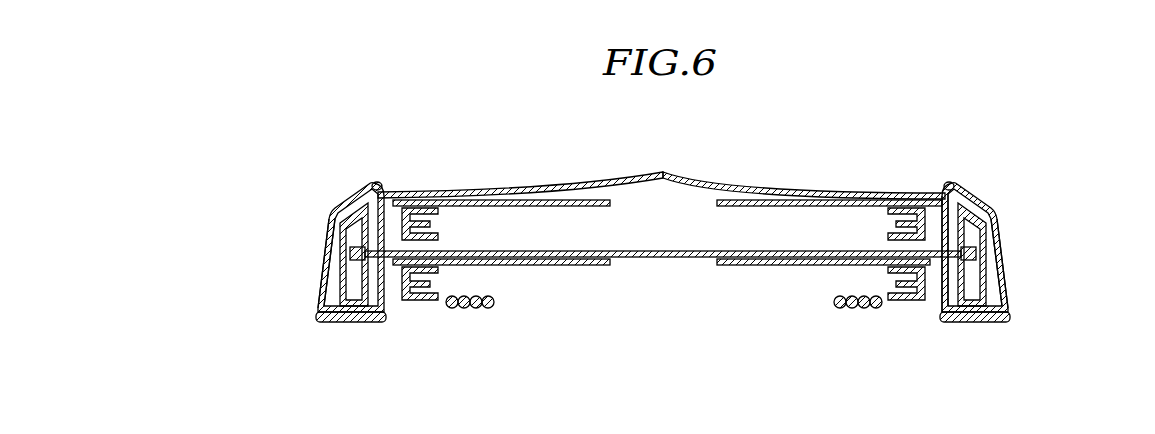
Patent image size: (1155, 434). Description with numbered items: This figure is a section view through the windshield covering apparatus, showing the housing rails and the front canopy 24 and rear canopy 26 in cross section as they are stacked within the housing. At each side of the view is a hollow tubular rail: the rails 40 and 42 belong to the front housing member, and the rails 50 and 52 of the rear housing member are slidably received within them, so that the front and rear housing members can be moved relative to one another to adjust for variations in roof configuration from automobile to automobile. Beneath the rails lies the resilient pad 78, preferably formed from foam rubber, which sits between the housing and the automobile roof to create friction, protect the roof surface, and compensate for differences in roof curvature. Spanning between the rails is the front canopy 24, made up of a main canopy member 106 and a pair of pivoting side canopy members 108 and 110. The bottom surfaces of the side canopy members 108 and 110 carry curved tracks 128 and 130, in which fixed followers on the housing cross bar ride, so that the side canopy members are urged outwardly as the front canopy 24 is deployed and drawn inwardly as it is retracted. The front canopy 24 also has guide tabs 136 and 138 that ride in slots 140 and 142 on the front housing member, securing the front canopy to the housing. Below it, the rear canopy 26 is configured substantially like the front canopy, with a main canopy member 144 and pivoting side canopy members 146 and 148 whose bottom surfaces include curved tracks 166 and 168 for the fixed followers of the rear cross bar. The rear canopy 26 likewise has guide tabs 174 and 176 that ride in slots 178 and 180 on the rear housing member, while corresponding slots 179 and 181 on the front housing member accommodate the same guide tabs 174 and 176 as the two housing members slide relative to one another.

The front canopy 24 is at (706, 148).
The rear canopy 26 is at (687, 297).
The rail 40 is at (978, 203).
The rail 42 is at (353, 196).
The rail 50 is at (1002, 233).
The rail 52 is at (328, 232).
The resilient pad 78 is at (323, 320).
The main canopy member 106 is at (729, 180).
The side canopy member 108 is at (806, 208).
The side canopy member 110 is at (606, 206).
The curved track 128 is at (888, 220).
The curved track 130 is at (438, 214).
The guide tab 136 is at (941, 193).
The guide tab 138 is at (386, 193).
The slot 140 is at (960, 197).
The slot 142 is at (363, 192).
The main canopy member 144 is at (670, 252).
The side canopy member 146 is at (730, 267).
The side canopy member 148 is at (577, 267).
The curved track 166 is at (890, 300).
The curved track 168 is at (440, 305).
The guide tab 174 is at (952, 265).
The guide tab 176 is at (358, 260).
The slot 178 is at (968, 250).
The slot 179 is at (935, 265).
The slot 180 is at (352, 254).
The slot 181 is at (387, 265).